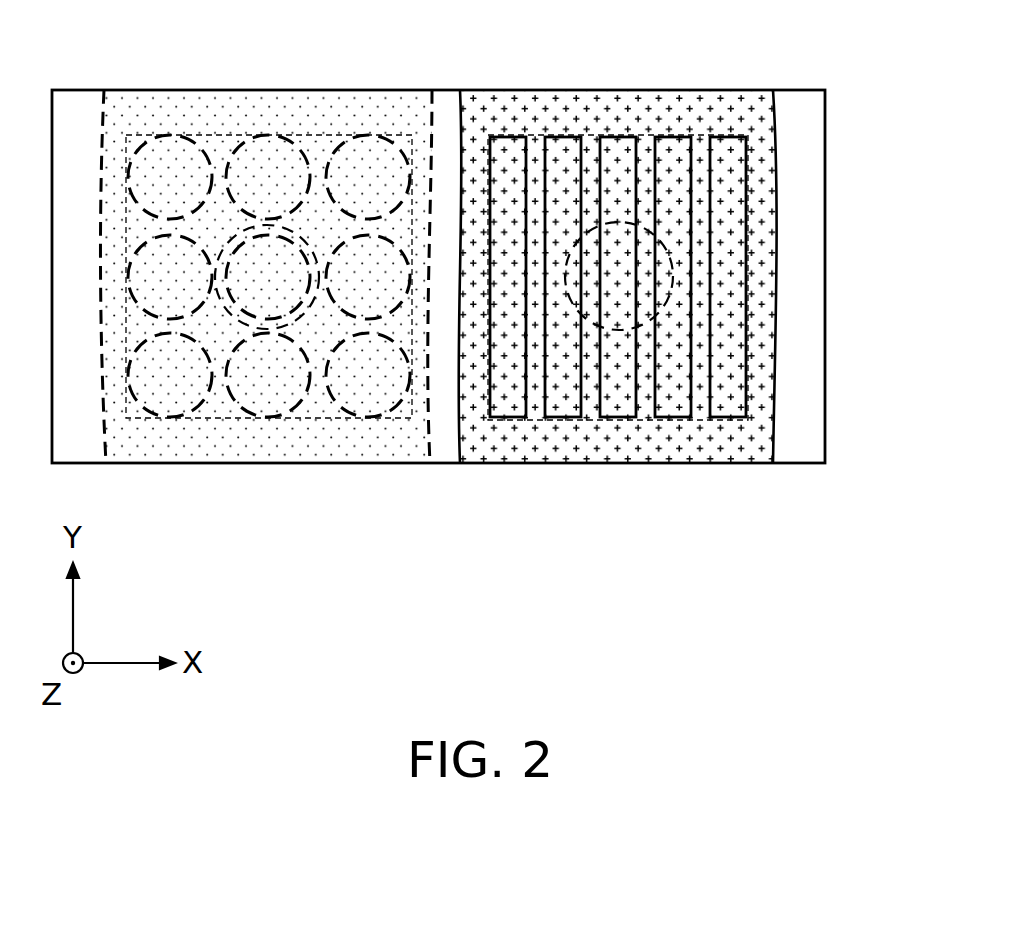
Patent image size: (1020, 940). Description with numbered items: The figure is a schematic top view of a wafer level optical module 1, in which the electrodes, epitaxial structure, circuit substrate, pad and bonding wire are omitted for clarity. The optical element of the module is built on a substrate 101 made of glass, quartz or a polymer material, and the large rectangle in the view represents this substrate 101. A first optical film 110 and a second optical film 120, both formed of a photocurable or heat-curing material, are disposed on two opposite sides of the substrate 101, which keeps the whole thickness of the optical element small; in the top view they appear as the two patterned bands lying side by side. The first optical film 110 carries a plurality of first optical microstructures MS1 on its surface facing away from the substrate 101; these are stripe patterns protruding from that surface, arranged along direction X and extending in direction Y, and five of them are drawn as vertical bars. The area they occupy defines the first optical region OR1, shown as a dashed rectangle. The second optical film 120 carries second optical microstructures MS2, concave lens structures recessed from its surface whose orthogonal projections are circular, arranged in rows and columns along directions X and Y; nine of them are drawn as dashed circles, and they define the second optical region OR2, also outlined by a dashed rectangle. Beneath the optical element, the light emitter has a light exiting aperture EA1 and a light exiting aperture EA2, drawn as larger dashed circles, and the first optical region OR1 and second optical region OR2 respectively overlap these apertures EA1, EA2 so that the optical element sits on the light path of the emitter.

The electronic device 1 is at (905, 600).
The substrate 101 is at (825, 277).
The first optical film 110 is at (773, 110).
The second optical film 120 is at (102, 118).
The first optical region OR1 is at (648, 135).
The second optical region OR2 is at (220, 133).
The first optical microstructures MS1 is at (563, 136).
The second optical microstructures MS2 is at (350, 138).
The light exiting aperture EA1 is at (615, 330).
The light exiting aperture EA2 is at (267, 330).